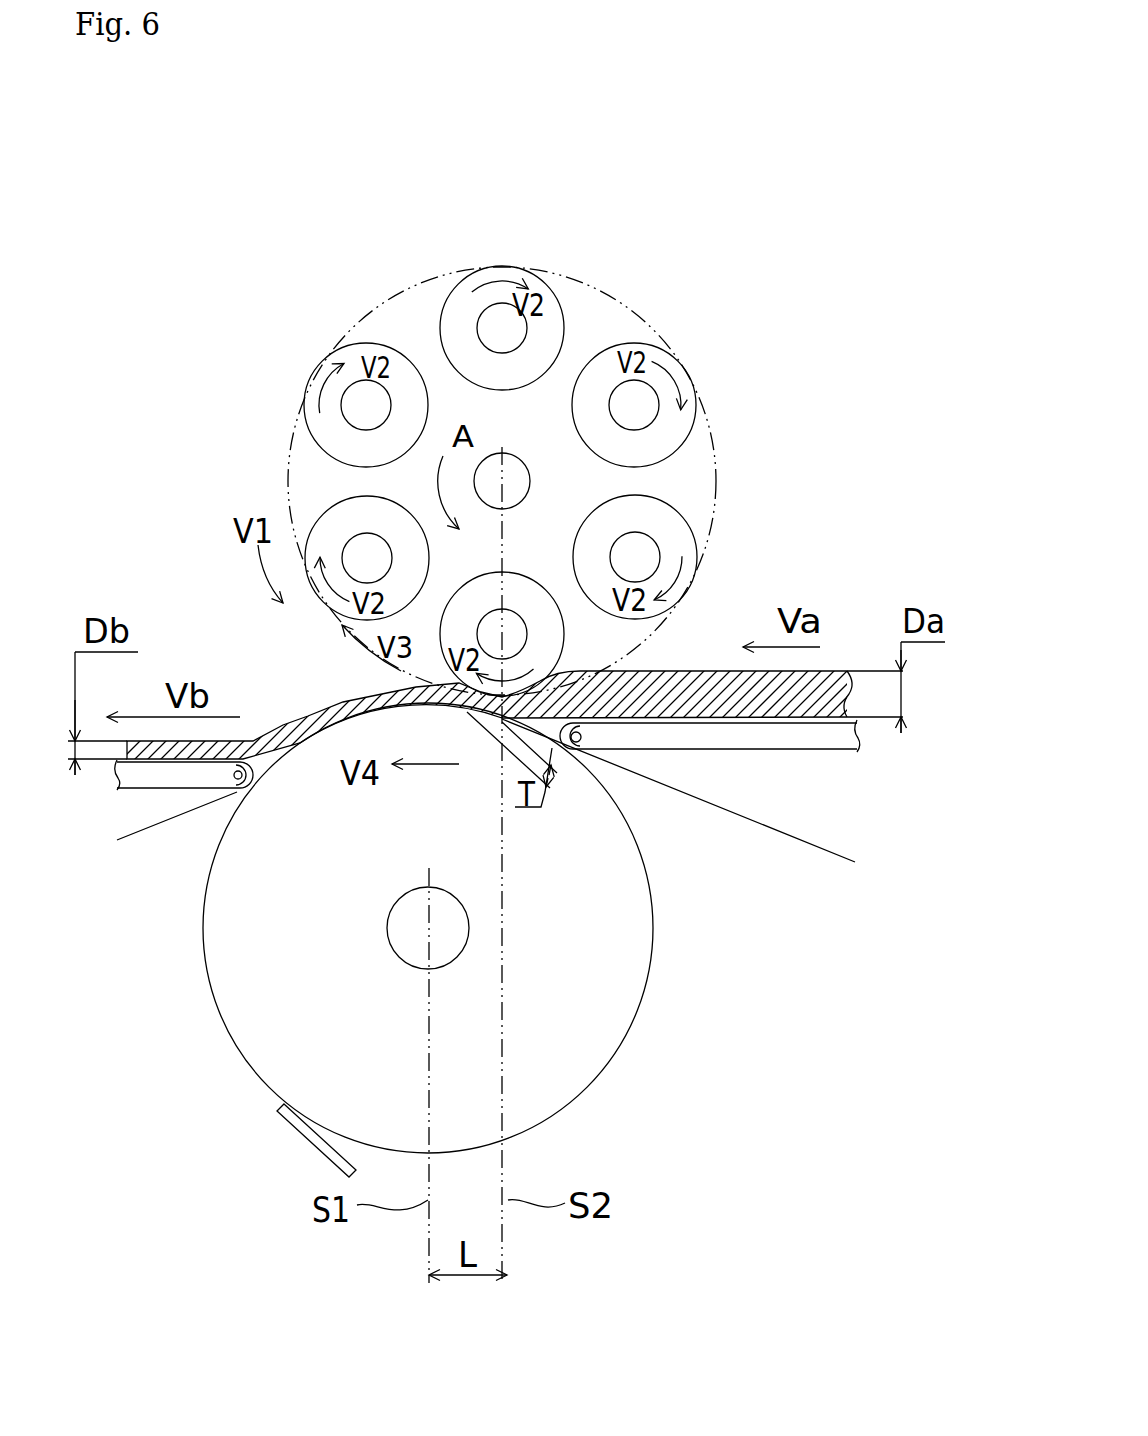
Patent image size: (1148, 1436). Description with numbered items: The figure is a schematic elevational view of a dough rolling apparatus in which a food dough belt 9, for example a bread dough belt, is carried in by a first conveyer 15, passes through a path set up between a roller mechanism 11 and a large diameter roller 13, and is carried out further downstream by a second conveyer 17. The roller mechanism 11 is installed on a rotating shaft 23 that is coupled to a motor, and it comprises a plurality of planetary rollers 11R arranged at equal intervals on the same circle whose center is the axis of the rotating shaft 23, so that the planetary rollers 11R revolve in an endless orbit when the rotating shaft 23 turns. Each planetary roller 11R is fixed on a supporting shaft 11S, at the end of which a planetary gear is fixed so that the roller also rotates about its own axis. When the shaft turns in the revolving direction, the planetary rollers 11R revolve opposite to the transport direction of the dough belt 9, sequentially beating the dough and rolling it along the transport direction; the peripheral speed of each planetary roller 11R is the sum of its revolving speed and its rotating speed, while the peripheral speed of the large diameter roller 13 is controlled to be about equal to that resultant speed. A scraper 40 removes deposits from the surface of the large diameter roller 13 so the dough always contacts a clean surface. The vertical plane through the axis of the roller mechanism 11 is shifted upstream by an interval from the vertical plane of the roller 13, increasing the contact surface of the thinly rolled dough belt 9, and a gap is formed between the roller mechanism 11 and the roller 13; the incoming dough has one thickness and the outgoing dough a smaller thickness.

The food dough belt 9 is at (830, 671).
The roller mechanism 11 is at (626, 298).
The planetary roller 11R is at (492, 275).
The supporting shaft 11S is at (488, 328).
The large diameter roller 13 is at (583, 1015).
The first conveyer 15 is at (790, 736).
The second conveyer 17 is at (160, 780).
The rotating shaft 23 is at (510, 481).
The scraper 40 is at (313, 1140).